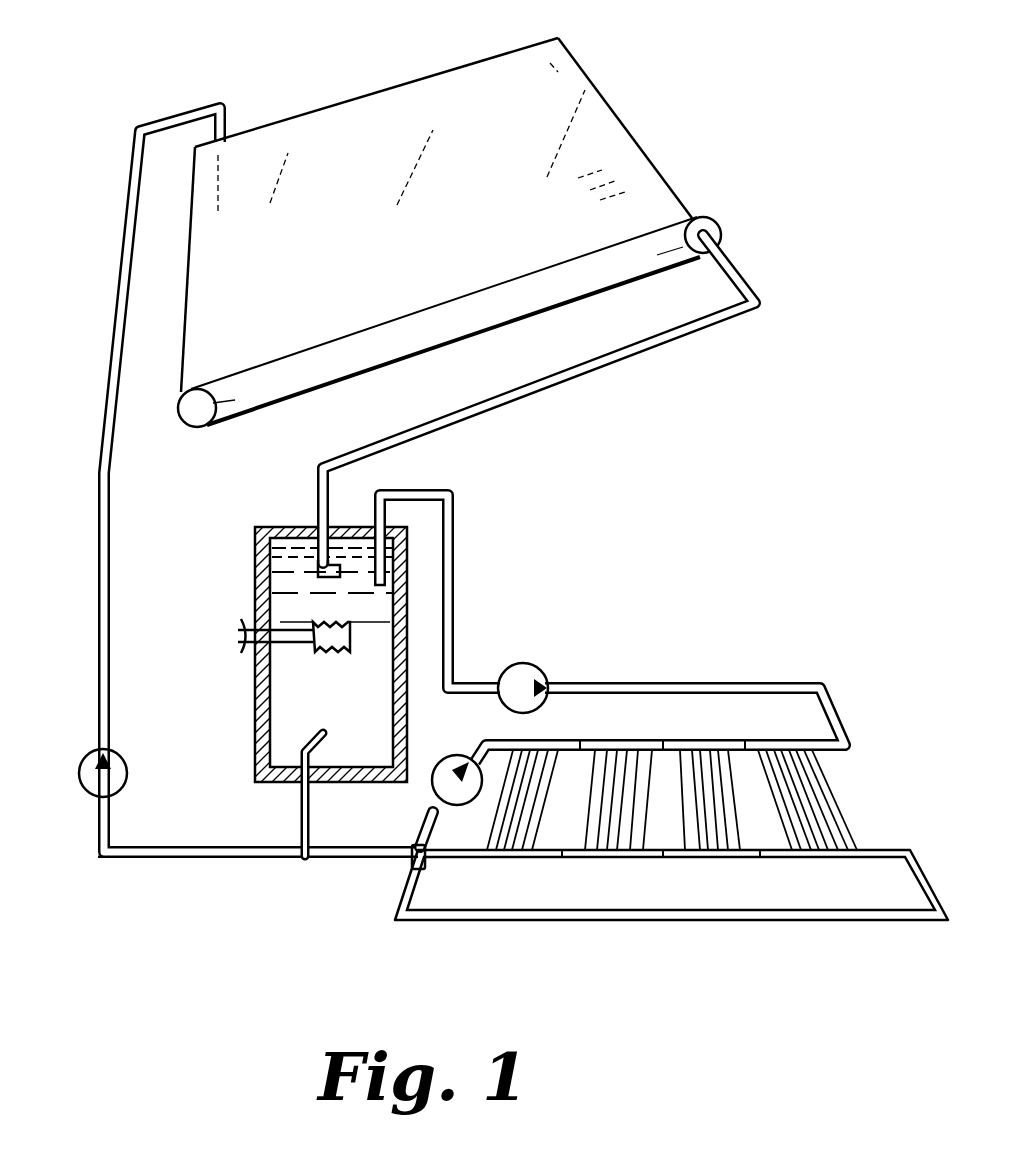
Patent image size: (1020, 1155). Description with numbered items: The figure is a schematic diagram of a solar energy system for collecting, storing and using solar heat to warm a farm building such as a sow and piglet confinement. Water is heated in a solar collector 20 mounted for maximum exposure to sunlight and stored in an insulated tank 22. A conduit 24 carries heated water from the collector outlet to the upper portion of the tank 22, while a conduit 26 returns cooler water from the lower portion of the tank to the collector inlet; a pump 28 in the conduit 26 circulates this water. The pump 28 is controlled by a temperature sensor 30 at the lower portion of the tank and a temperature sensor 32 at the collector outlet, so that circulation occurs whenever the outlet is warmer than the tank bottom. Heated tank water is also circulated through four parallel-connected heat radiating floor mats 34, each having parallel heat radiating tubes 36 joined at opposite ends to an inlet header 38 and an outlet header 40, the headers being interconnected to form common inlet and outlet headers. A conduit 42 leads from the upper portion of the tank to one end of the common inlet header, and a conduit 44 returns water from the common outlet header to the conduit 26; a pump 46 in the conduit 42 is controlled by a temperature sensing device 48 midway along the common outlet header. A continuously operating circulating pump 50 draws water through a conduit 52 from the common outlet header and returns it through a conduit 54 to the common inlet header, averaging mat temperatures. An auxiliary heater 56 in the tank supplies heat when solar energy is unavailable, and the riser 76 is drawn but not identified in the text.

The solar collector 20 is at (684, 169).
The insulated tank 22 is at (257, 686).
The conduit 24 is at (545, 392).
The conduit 26 is at (301, 818).
The pump 28 is at (82, 790).
The temperature sensor 30 is at (360, 762).
The temperature sensor 32 is at (722, 232).
The heat radiating floor mat 34 is at (530, 870).
The heat radiating tubes 36 is at (608, 813).
The inlet header 38 is at (612, 738).
The outlet header 40 is at (485, 860).
The conduit 42 is at (455, 640).
The conduit 44 is at (336, 858).
The pump 46 is at (547, 672).
The temperature sensing device 48 is at (665, 856).
The circulating pump 50 is at (442, 766).
The conduit 52 is at (557, 923).
The conduit 54 is at (472, 737).
The auxiliary heater 56 is at (312, 620).
The supply conduit to collector 76 is at (98, 694).